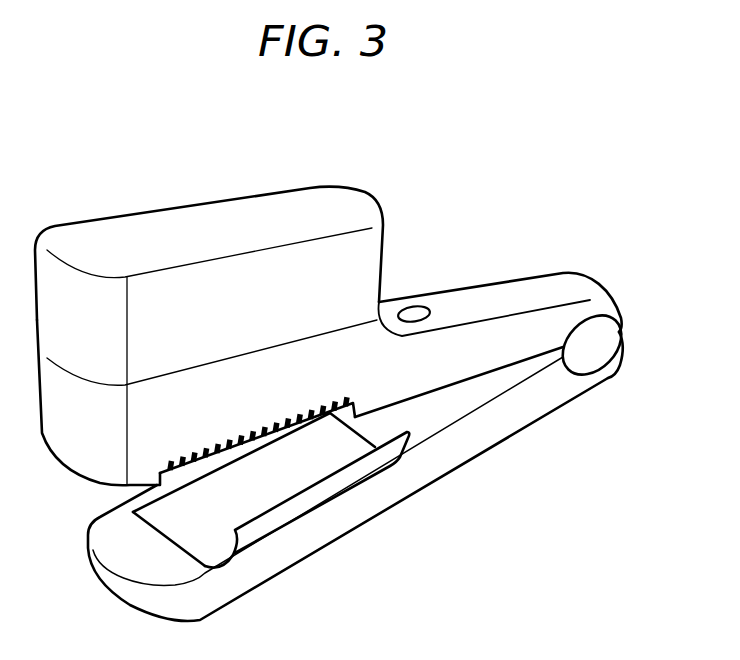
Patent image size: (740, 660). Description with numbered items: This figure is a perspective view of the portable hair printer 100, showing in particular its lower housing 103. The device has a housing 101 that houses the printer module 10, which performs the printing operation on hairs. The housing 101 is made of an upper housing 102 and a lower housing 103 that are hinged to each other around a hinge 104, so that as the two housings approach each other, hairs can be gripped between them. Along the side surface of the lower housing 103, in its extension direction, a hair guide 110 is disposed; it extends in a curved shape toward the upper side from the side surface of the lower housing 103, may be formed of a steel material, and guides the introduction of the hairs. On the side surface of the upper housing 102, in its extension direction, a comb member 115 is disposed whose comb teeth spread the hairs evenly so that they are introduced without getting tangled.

The portable hair printer 100 is at (113, 164).
The printer module 10 is at (340, 210).
The housing 101 is at (191, 195).
The upper housing 102 is at (552, 325).
The lower housing 103 is at (452, 450).
The hinge 104 is at (590, 342).
The hair guide 110 is at (330, 487).
The comb member 115 is at (309, 401).